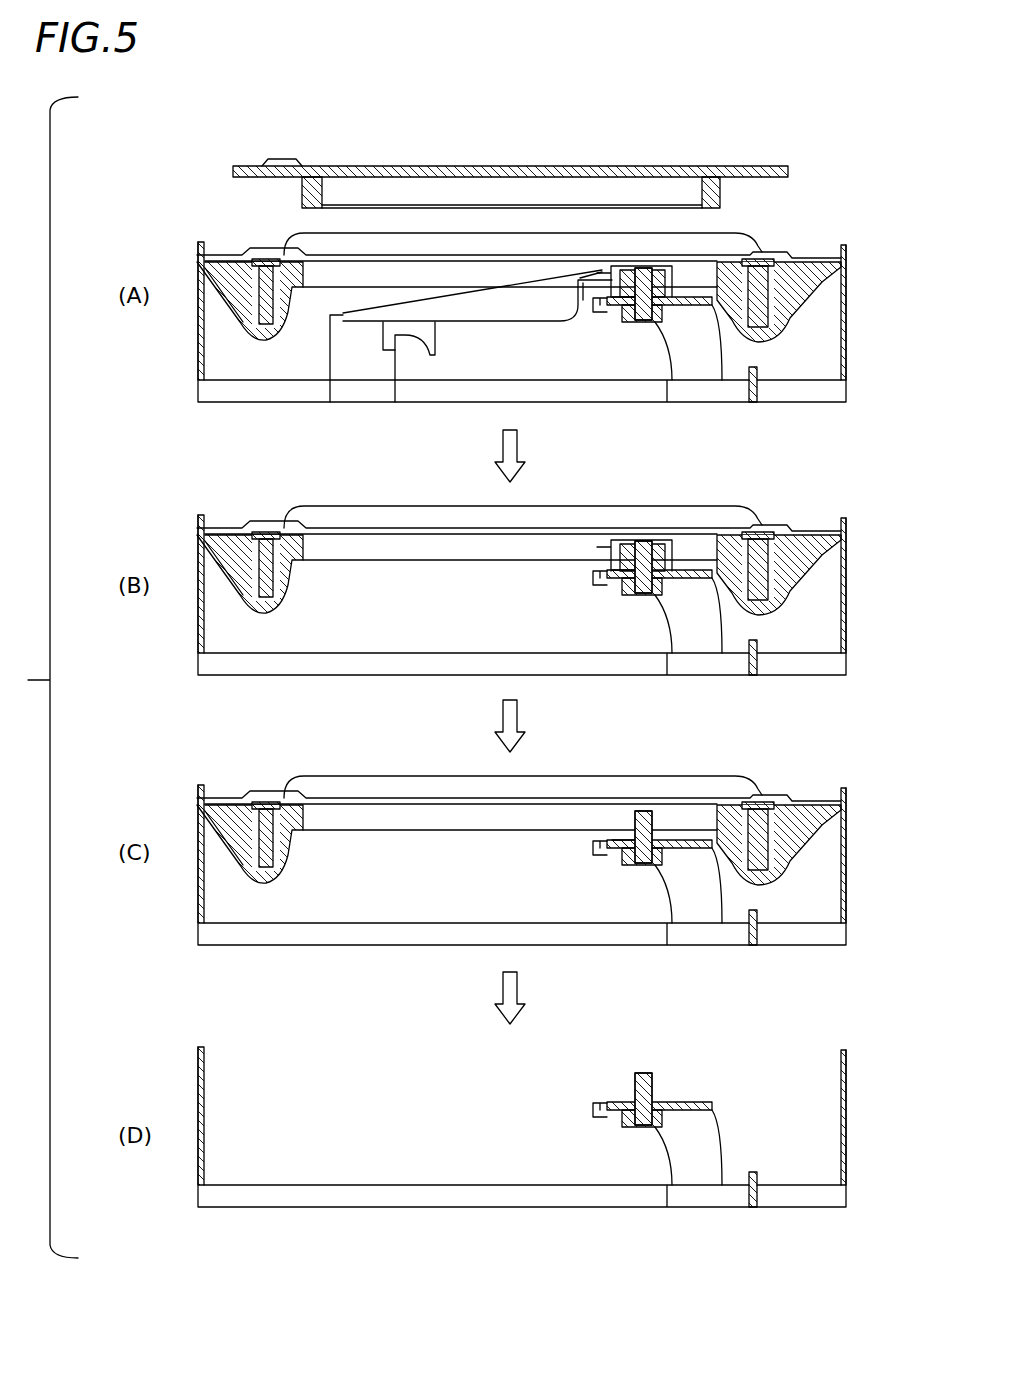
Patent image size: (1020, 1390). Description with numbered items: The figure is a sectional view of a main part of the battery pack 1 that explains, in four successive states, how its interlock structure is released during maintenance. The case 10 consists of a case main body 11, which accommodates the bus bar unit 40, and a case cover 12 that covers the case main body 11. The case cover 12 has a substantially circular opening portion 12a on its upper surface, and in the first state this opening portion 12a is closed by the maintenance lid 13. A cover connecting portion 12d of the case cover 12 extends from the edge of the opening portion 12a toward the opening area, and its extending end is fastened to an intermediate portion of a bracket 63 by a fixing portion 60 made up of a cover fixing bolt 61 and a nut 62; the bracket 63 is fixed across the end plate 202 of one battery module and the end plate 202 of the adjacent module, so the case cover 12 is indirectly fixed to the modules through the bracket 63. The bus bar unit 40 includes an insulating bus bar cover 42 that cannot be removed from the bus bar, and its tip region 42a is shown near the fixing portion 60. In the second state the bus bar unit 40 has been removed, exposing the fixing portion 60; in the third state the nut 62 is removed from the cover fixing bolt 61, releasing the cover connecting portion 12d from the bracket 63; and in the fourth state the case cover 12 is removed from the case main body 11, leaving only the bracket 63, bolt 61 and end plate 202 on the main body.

The battery pack 1 is at (182, 578).
The case 10 is at (856, 441).
The case main body 11 is at (847, 303).
The case cover 12 is at (800, 255).
The opening portion 12a is at (345, 265).
The cover connecting portion 12d is at (600, 322).
The maintenance lid 13 is at (640, 165).
The bus bar unit 40 is at (421, 358).
The bus bar cover 42 is at (477, 312).
The arm tip 42a is at (660, 249).
The fixing portion 60 is at (703, 290).
The cover fixing bolt 61 is at (645, 323).
The nut 62 is at (612, 267).
The bracket 63 is at (596, 306).
The end plate 202 is at (758, 370).